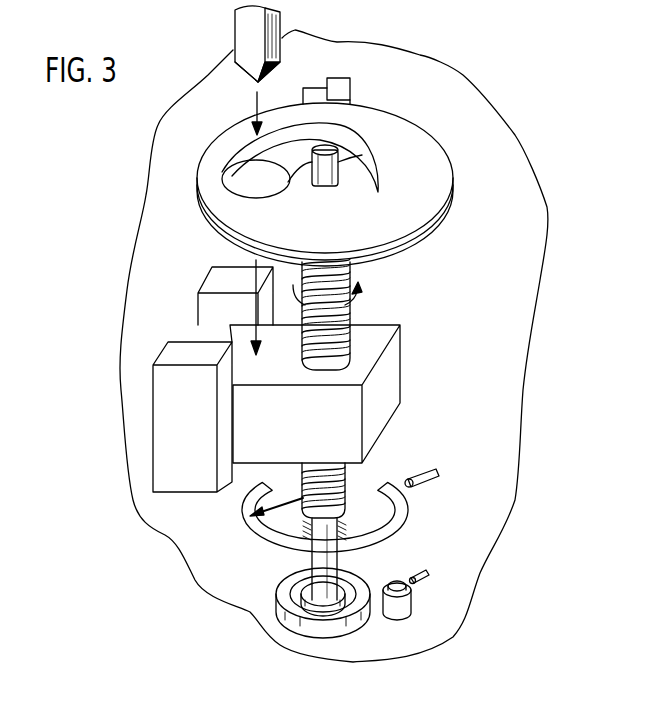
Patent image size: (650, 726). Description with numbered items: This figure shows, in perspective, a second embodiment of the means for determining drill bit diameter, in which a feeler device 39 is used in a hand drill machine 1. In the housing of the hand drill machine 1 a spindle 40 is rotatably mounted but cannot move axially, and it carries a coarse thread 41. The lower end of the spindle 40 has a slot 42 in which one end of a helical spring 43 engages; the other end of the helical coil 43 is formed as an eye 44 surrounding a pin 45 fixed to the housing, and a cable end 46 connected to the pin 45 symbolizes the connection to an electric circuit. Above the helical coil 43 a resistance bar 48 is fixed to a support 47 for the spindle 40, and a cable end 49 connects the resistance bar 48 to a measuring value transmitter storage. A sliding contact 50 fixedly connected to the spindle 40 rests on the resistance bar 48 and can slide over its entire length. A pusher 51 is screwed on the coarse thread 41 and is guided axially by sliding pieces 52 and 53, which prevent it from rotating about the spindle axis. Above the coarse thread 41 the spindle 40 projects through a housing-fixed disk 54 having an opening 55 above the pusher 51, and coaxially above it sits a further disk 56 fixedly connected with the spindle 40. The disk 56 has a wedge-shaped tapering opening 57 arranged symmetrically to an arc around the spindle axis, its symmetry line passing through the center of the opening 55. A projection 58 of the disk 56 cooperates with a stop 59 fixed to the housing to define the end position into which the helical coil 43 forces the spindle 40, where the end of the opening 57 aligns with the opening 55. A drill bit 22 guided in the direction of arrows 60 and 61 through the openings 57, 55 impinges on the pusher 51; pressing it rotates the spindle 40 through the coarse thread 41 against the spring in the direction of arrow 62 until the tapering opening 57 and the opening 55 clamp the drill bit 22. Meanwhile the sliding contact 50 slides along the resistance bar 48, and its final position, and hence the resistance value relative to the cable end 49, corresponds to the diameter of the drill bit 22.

The hand drill machine 1 is at (521, 283).
The drill bit 22 is at (257, 30).
The feeler device 39 is at (472, 322).
The spindle 40 is at (329, 566).
The coarse thread 41 is at (333, 282).
The slot 42 is at (330, 605).
The helical spring 43 is at (277, 590).
The eye 44 is at (404, 606).
The pin 45 is at (398, 582).
The cable end 46 is at (430, 578).
The support 47 is at (344, 522).
The resistance bar 48 is at (399, 507).
The cable end 49 is at (412, 478).
The sliding contact 50 is at (288, 485).
The pusher 51 is at (390, 382).
The sliding piece 52 is at (212, 287).
The sliding piece 53 is at (182, 358).
The disk 54 is at (428, 241).
The opening 55 is at (228, 183).
The further disk 56 is at (436, 174).
The wedge-shaped tapering opening 57 is at (253, 146).
The projection 58 is at (322, 66).
The stop 59 is at (347, 83).
The arrow 60 is at (256, 100).
The arrow 61 is at (256, 315).
The arrow 62 is at (361, 301).